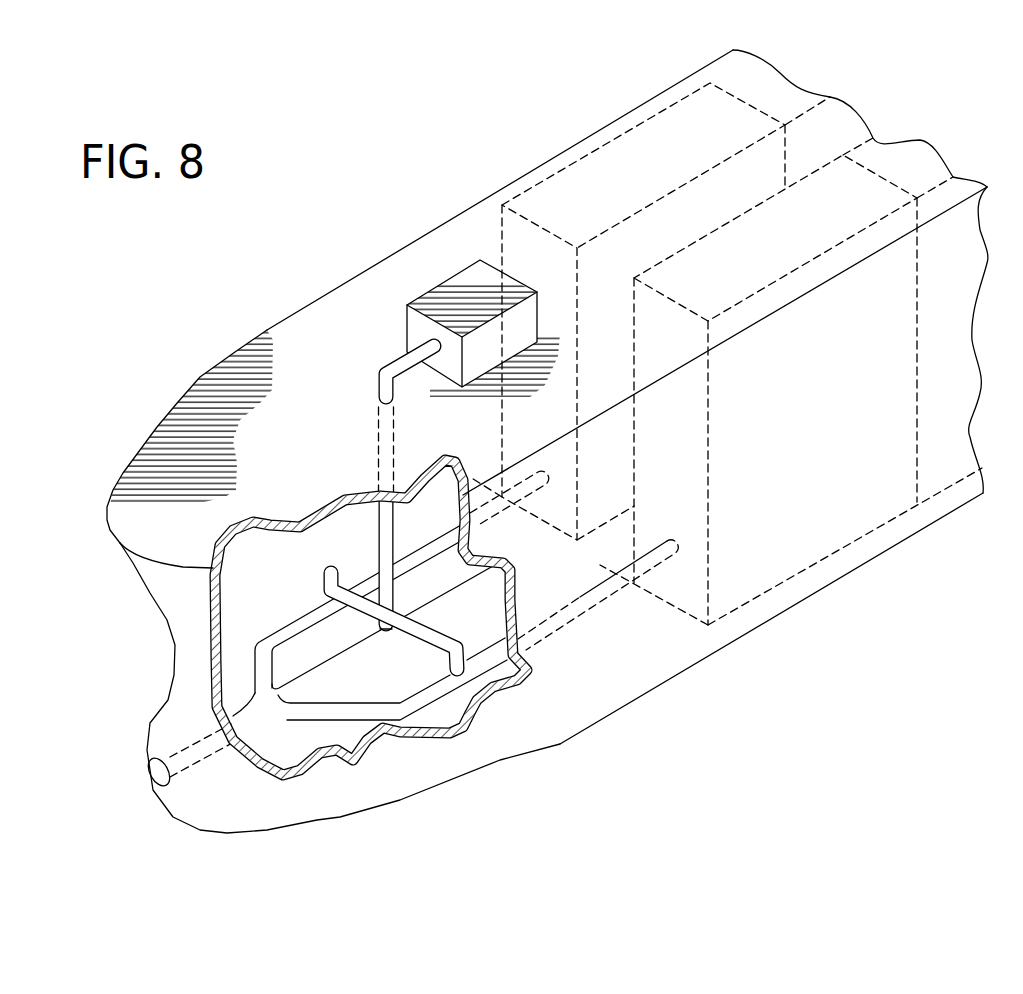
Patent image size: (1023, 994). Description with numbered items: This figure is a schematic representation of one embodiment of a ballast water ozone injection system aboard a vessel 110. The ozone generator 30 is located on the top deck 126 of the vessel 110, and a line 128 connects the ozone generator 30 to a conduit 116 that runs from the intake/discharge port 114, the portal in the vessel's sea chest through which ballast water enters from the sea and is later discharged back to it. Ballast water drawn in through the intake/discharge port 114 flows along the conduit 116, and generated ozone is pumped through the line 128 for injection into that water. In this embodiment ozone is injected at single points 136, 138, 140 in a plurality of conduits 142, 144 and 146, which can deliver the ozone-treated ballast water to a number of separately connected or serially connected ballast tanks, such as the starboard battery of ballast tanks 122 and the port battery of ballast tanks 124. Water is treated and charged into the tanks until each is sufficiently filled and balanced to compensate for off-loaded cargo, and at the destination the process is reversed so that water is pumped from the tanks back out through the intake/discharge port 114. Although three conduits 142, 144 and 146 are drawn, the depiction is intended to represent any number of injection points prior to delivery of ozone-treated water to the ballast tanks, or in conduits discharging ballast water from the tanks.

The ozone generator 30 is at (468, 287).
The vessel 110 is at (350, 277).
The intake/discharge port 114 is at (153, 772).
The conduit 116 is at (193, 743).
The starboard battery of ballast tanks 122 is at (832, 523).
The port battery of ballast tanks 124 is at (603, 163).
The top deck 126 is at (137, 530).
The line 128 is at (375, 452).
The injection point 136 is at (455, 677).
The injection point 138 is at (378, 637).
The injection point 140 is at (333, 607).
The conduit 142 is at (613, 587).
The conduit 144 is at (315, 683).
The conduit 146 is at (495, 510).